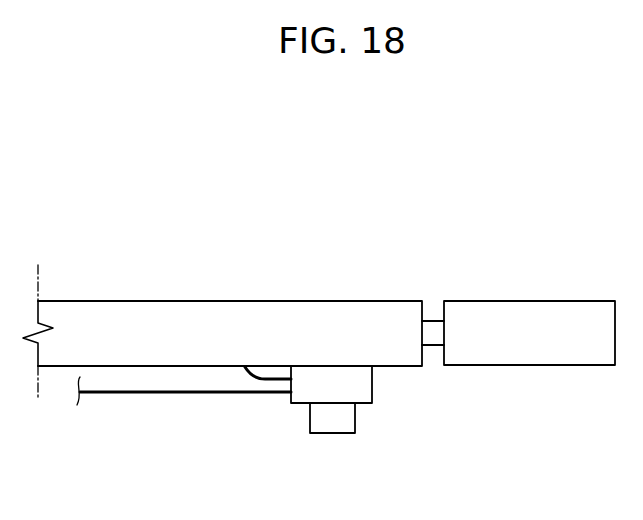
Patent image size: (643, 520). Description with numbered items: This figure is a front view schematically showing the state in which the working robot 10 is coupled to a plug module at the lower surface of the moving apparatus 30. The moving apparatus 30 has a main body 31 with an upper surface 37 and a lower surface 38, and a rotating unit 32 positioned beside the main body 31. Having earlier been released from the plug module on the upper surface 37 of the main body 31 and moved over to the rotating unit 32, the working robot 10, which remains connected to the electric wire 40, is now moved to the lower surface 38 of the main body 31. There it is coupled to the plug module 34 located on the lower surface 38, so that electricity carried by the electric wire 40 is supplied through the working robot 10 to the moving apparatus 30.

The working robot 10 is at (356, 437).
The moving apparatus 30 is at (511, 259).
The main body 31 is at (407, 313).
The rotating unit 32 is at (536, 317).
The plug module 34 is at (268, 373).
The upper surface 37 is at (347, 301).
The lower surface 38 is at (345, 437).
The electric wire 40 is at (130, 394).